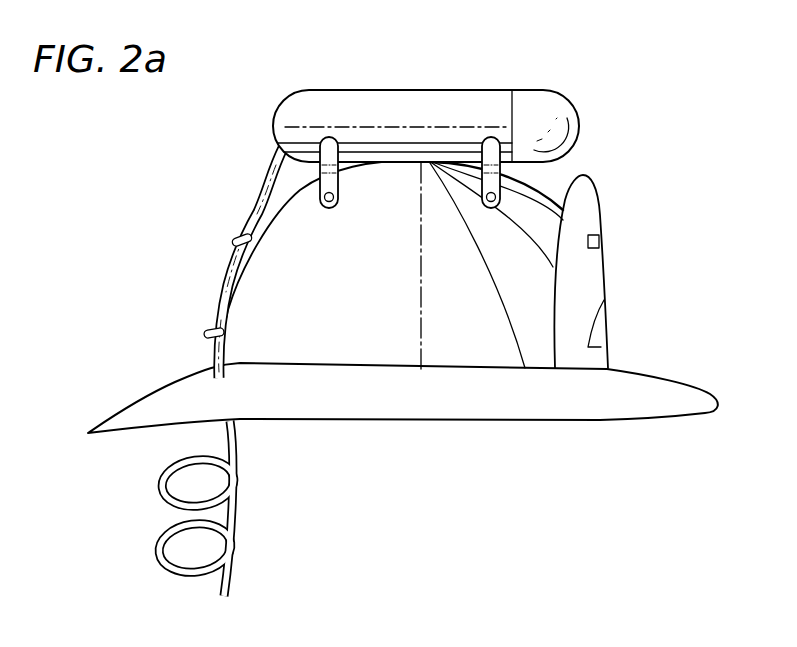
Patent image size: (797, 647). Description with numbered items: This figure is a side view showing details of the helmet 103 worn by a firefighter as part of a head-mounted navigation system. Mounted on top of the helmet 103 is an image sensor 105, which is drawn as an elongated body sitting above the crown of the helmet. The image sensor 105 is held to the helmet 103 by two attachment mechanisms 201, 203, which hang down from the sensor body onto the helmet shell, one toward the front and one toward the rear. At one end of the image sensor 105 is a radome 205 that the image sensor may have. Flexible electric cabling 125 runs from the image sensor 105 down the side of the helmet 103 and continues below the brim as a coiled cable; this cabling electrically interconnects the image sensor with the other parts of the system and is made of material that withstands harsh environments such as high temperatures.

The helmet 103 is at (607, 351).
The image sensor 105 is at (427, 90).
The flexible electric cabling 125 is at (160, 546).
The attachment mechanism 201 is at (327, 142).
The attachment mechanism 203 is at (490, 142).
The radome 205 is at (580, 125).